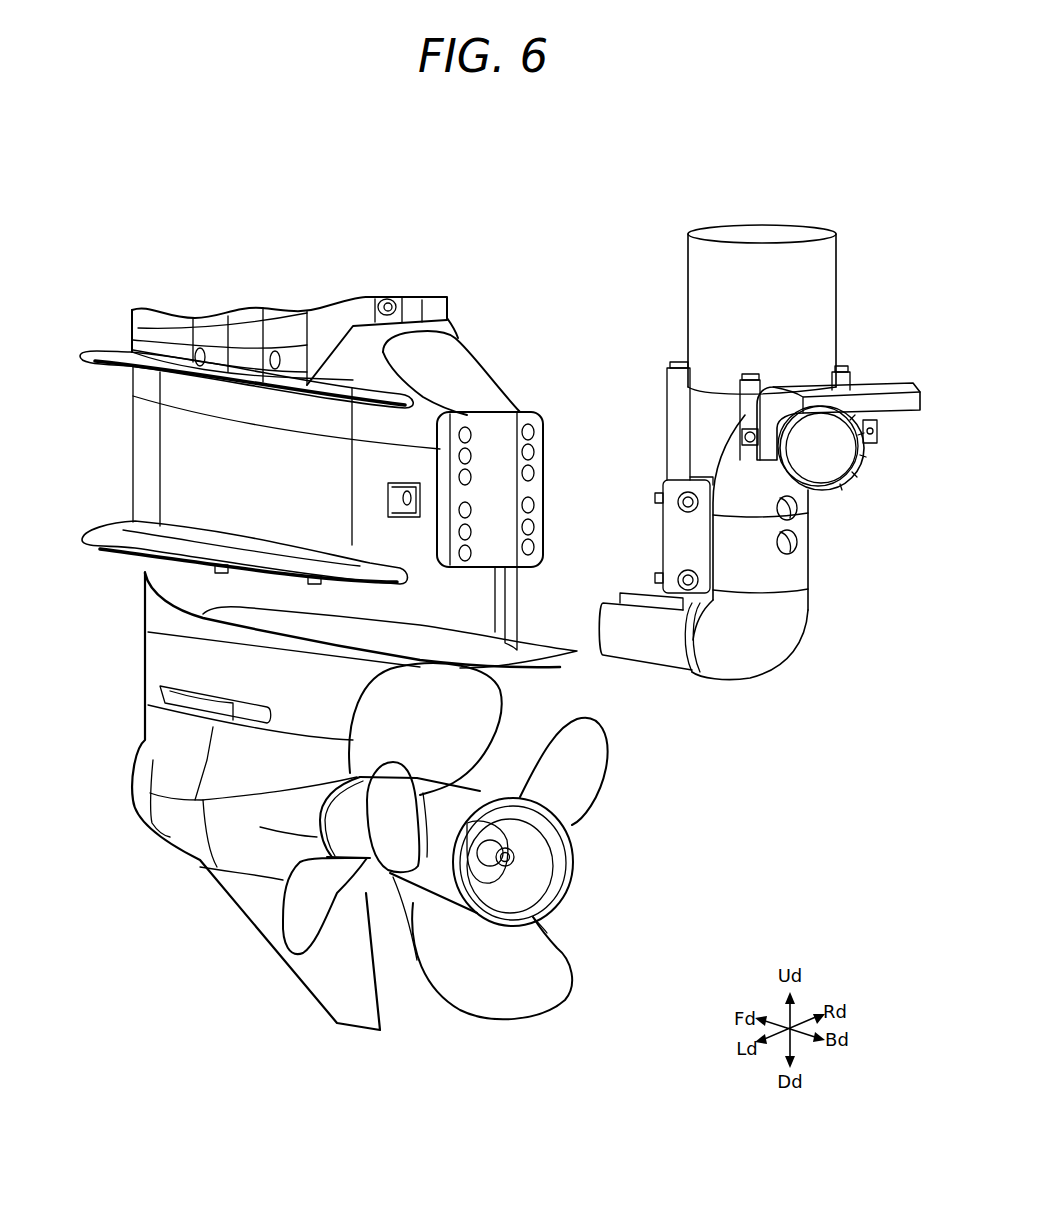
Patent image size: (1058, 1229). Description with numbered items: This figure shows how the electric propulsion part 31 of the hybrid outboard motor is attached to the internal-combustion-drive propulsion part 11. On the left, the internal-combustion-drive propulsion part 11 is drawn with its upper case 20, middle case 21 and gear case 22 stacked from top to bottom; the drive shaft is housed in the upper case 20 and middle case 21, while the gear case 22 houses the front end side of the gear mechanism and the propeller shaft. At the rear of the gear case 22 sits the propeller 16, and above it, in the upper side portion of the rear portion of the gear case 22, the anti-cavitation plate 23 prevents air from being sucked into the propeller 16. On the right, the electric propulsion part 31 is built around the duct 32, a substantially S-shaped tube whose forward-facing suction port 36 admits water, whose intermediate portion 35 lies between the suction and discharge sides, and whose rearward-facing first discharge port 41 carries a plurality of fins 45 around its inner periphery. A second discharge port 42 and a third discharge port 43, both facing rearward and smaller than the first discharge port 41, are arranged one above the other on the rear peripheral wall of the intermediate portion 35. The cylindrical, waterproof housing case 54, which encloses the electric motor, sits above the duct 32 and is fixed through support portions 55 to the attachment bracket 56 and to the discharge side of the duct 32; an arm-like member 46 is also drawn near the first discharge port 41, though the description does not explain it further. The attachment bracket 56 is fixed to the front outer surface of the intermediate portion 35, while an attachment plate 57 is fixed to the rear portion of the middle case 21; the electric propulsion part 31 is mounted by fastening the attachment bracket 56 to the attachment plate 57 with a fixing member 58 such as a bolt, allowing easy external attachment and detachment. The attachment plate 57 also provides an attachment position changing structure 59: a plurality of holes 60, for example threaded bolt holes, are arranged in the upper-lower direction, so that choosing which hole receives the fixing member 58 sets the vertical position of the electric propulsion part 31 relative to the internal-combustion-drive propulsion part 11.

The internal-combustion-drive propulsion part 11 is at (128, 292).
The propeller 16 is at (493, 705).
The upper case 20 is at (135, 327).
The middle case 21 is at (134, 442).
The gear case 22 is at (142, 690).
The anti-cavitation plate 23 is at (530, 650).
The electric propulsion part 31 is at (888, 326).
The duct 32 is at (810, 645).
The intermediate portion 35 is at (782, 572).
The suction port 36 is at (620, 598).
The first discharge port 41 is at (850, 470).
The second discharge port 42 is at (797, 515).
The third discharge port 43 is at (800, 548).
The fins 45 is at (862, 450).
The bracket arm 46 is at (893, 393).
The housing case 54 is at (772, 238).
The support portions 55 is at (665, 430).
The attachment bracket 56 is at (665, 535).
The attachment plate 57 is at (497, 430).
The fixing member 58 is at (657, 497).
The attachment position changing structure 59 is at (550, 448).
The holes 60 is at (465, 437).